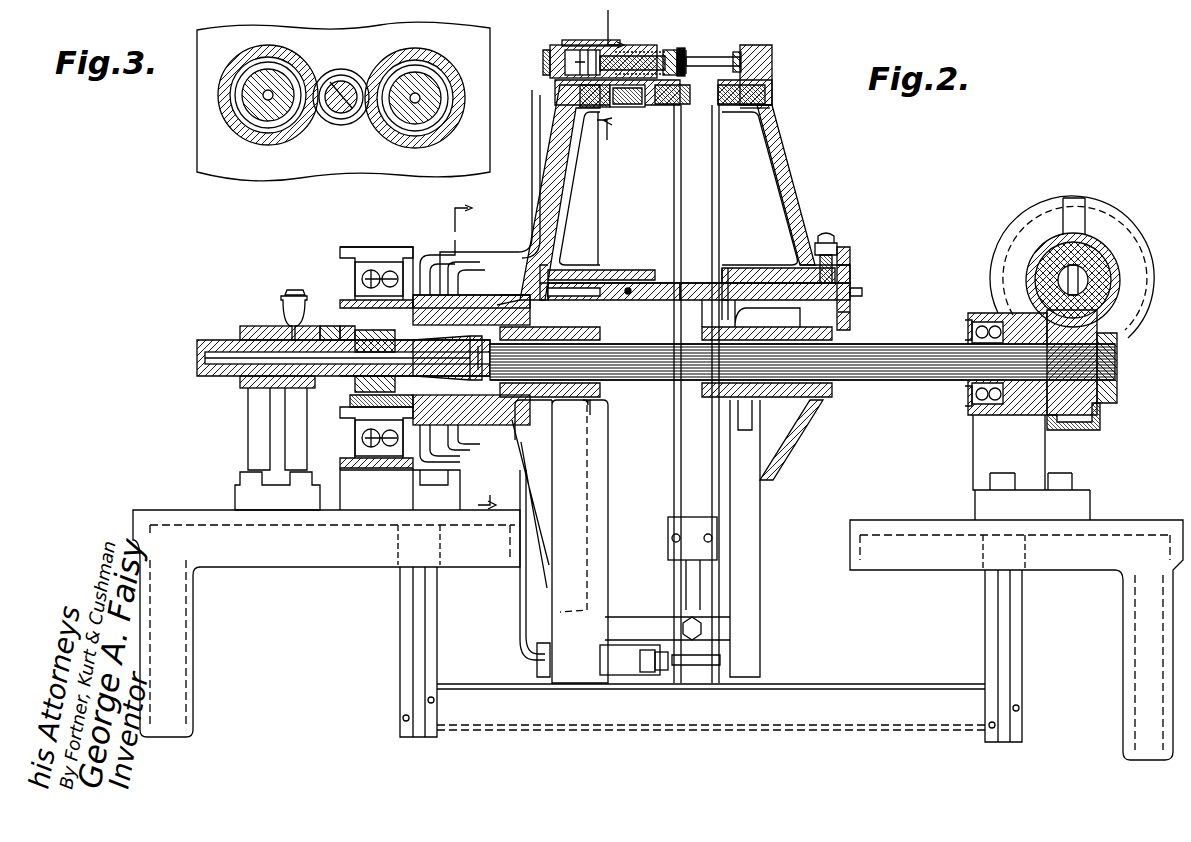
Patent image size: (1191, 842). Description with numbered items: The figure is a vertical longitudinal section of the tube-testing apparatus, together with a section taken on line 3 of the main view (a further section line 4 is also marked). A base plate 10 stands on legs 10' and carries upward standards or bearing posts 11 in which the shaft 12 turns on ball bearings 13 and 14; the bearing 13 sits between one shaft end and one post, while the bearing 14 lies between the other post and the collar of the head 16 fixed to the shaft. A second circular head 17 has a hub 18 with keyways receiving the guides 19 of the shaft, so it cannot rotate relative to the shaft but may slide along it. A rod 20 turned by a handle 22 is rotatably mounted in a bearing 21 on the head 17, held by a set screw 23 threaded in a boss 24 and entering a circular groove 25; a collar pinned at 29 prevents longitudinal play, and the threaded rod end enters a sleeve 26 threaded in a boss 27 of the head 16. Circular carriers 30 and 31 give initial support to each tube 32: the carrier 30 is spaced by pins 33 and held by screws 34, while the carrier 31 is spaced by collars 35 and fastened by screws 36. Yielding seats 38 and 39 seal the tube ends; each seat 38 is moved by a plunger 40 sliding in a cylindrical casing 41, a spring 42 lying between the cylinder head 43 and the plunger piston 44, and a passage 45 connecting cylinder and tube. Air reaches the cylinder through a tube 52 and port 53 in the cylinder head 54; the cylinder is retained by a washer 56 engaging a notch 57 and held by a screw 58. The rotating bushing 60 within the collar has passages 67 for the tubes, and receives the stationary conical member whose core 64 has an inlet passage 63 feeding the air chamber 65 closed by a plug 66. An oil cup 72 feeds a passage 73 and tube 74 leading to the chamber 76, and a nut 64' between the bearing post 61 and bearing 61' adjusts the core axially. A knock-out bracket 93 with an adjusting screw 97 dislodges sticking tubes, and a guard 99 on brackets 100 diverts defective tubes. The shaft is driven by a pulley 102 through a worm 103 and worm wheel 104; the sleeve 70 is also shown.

In FIG. 2, the section line 3— 3 is at (610, 77).
In FIG. 2, the section line 4- 4 is at (480, 357).
In FIG. 2, the base plate 10 is at (658, 624).
In FIG. 2, the legs 10' is at (655, 657).
In FIG. 2, the standards or bearing posts 11 is at (342, 462).
In FIG. 2, the shaft 12 is at (913, 350).
In FIG. 2, the ball bearing 13 is at (980, 398).
In FIG. 2, the ball bearing 14 is at (342, 262).
In FIG. 2, the head 16 is at (478, 280).
In FIG. 2, the head 17 is at (800, 190).
In FIG. 2, the hub 18 is at (772, 425).
In FIG. 2, the guides 19 is at (870, 350).
In FIG. 2, the rod 20 is at (700, 280).
In FIG. 2, the bearing 21 is at (748, 268).
In FIG. 2, the handle 22 is at (848, 250).
In FIG. 2, the set screw 23 is at (830, 252).
In FIG. 2, the boss 24 is at (822, 240).
In FIG. 2, the circular groove 25 is at (795, 305).
In FIG. 2, the sleeve 26 is at (630, 275).
In FIG. 2, the boss 27 is at (555, 268).
In FIG. 2, the collar 29 is at (730, 268).
In FIG. 2, the carrier 30 is at (672, 150).
In FIG. 2, the carrier 31 is at (712, 150).
In FIG. 2, the tube 32 is at (712, 62).
In FIG. 2, the pins 33 is at (662, 108).
In FIG. 2, the screws 34 is at (690, 112).
In FIG. 2, the spacing collars 35 is at (745, 115).
In FIG. 2, the screws 36 is at (770, 95).
In FIG. 2, the seat 38 is at (688, 50).
In FIG. 2, the seat 39 is at (742, 55).
In FIG. 3, the plunger 40 is at (405, 115).
In FIG. 2, the plunger 40 is at (680, 45).
In FIG. 3, the cylindrical casing 41 is at (433, 115).
In FIG. 2, the cylindrical casing 41 is at (555, 43).
In FIG. 3, the spring 42 is at (428, 108).
In FIG. 2, the spring 42 is at (625, 56).
In FIG. 3, the head 43 is at (420, 98).
In FIG. 2, the head 43 is at (635, 52).
In FIG. 2, the plunger piston 44 is at (580, 45).
In FIG. 2, the passage 45 is at (667, 50).
In FIG. 2, the tube 52 is at (528, 226).
In FIG. 2, the port 53 is at (565, 85).
In FIG. 2, the head 54 is at (545, 58).
In FIG. 3, the washer 56 is at (335, 92).
In FIG. 3, the notch 57 is at (370, 80).
In FIG. 3, the screw 58 is at (335, 103).
In FIG. 2, the bushing or sleeve 60 is at (400, 405).
In FIG. 2, the bearing post 61 is at (260, 449).
In FIG. 2, the bearing 61' is at (245, 390).
In FIG. 2, the inlet passage 63 is at (200, 368).
In FIG. 2, the core 64 is at (257, 325).
In FIG. 2, the nut 64' is at (318, 301).
In FIG. 2, the air chamber 65 is at (530, 500).
In FIG. 2, the plug 66 is at (590, 400).
In FIG. 2, the passages 67 is at (348, 330).
In FIG. 2, the sleeve 70 is at (395, 385).
In FIG. 2, the oil cup 72 is at (283, 305).
In FIG. 2, the passage 73 is at (375, 342).
In FIG. 2, the tube 74 is at (410, 390).
In FIG. 2, the chamber 76 is at (513, 294).
In FIG. 2, the knock-out bracket 93 is at (700, 590).
In FIG. 2, the screw 97 is at (685, 625).
In FIG. 2, the guard 99 is at (845, 688).
In FIG. 2, the brackets 100 is at (990, 633).
In FIG. 2, the pulley 102 is at (1150, 255).
In FIG. 2, the worm 103 is at (1040, 305).
In FIG. 2, the worm wheel 104 is at (1105, 415).